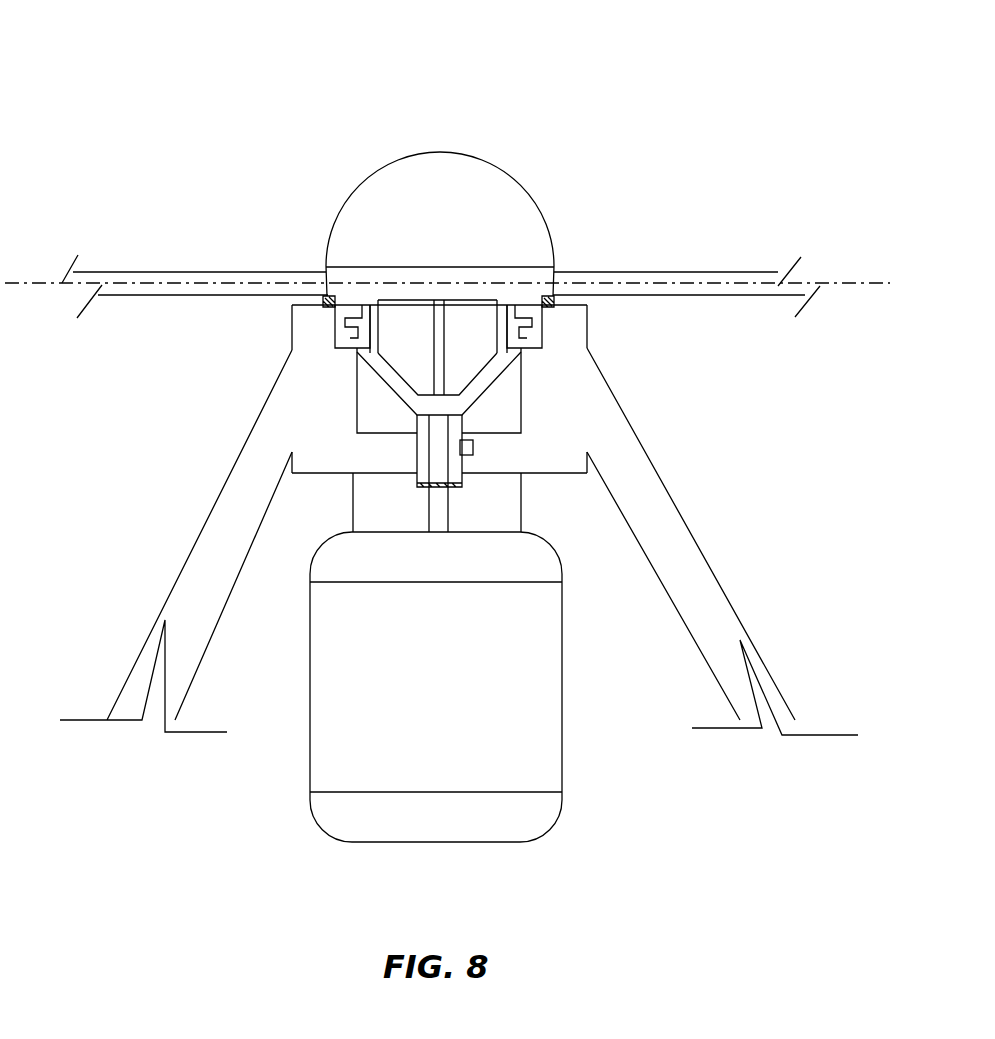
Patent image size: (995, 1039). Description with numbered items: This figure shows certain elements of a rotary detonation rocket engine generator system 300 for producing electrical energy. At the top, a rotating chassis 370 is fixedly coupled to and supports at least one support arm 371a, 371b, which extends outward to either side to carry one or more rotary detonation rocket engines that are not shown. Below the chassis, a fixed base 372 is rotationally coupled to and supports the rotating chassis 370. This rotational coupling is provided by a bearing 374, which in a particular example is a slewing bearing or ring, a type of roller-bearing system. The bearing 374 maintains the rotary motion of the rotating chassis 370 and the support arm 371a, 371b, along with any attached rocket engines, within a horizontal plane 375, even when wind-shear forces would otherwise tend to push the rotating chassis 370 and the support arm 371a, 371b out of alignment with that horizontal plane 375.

The rotary detonation rocket engine generator system 300 is at (357, 67).
The rotating chassis 370 is at (533, 175).
The support arm 371a is at (185, 272).
The support arm 371b is at (675, 272).
The fixed base 372 is at (658, 429).
The bearing 374 is at (545, 324).
The horizontal plane 375 is at (851, 282).